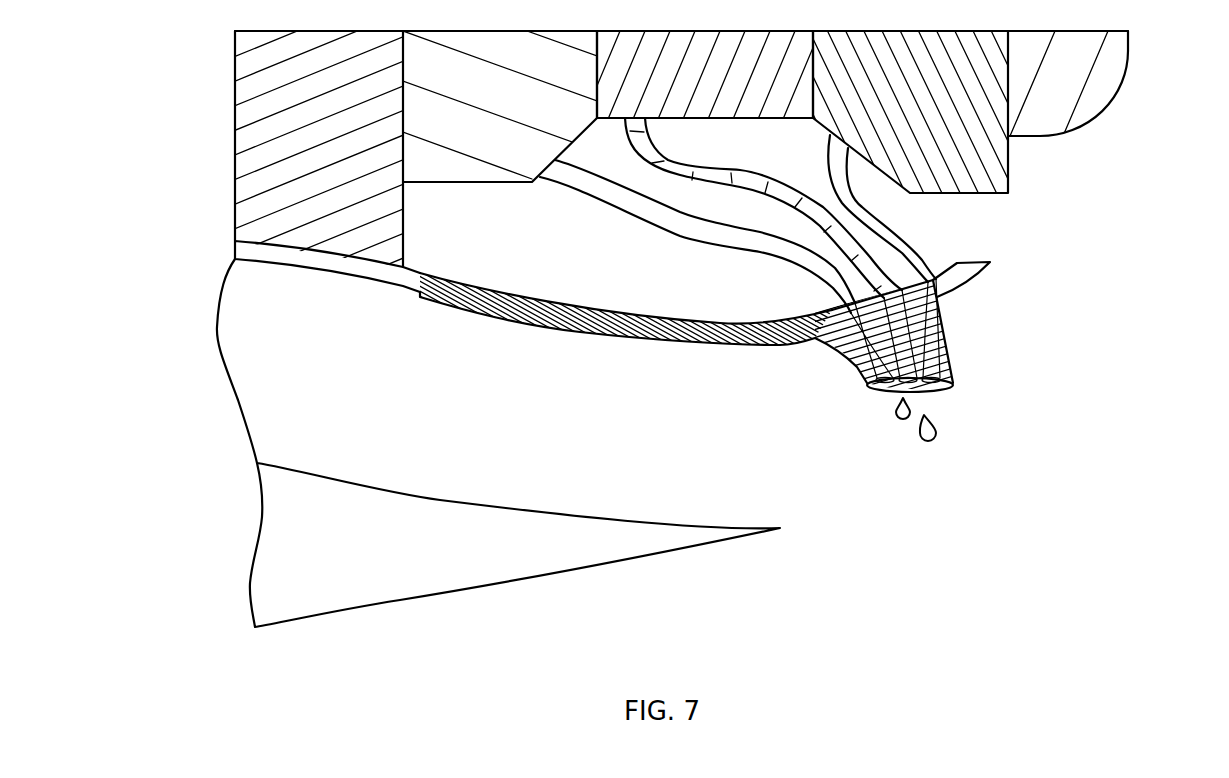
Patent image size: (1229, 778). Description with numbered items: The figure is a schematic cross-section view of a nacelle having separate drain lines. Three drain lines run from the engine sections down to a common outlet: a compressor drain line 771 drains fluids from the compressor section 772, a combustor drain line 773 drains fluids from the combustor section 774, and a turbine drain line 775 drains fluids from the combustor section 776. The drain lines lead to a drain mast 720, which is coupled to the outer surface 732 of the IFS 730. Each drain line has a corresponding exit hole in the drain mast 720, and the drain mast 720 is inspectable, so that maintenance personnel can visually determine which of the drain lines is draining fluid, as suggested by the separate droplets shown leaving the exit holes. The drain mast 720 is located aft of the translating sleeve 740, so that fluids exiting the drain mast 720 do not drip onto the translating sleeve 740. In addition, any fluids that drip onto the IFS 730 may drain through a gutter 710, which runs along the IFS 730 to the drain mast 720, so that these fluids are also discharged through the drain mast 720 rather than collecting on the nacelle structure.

The gutter 710 is at (700, 348).
The drain mast 720 is at (947, 357).
The IFS 730 is at (397, 287).
The outer surface 732 is at (960, 290).
The translating sleeve 740 is at (677, 552).
The compressor drain line 771 is at (620, 210).
The compressor section 772 is at (470, 182).
The combustor drain line 773 is at (710, 183).
The combustor section 774 is at (723, 120).
The turbine drain line 775 is at (912, 252).
The combustor section 776 is at (1008, 168).